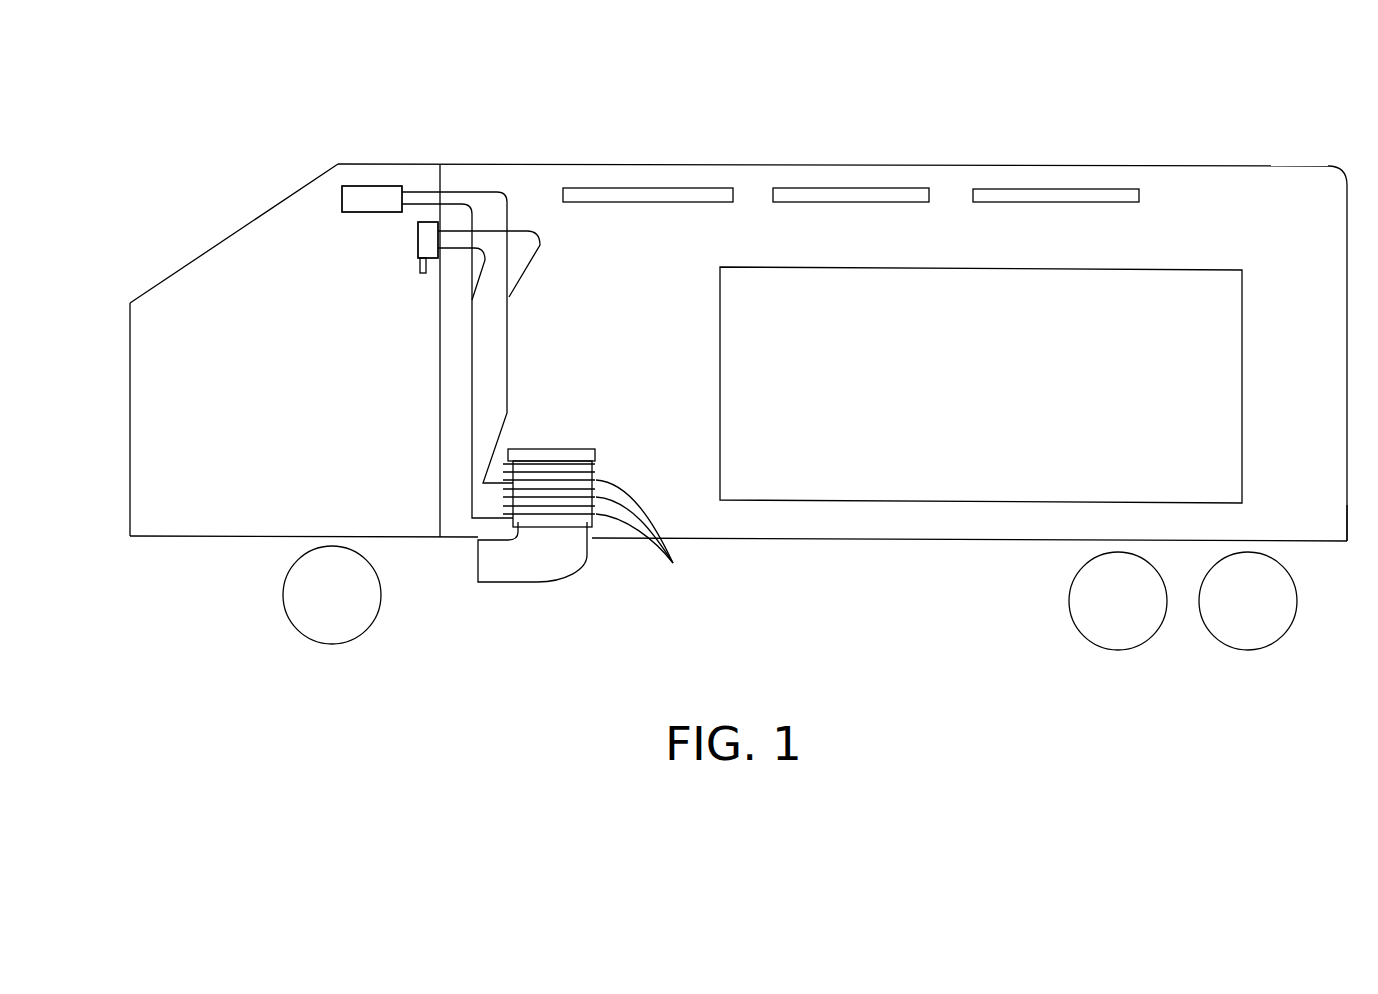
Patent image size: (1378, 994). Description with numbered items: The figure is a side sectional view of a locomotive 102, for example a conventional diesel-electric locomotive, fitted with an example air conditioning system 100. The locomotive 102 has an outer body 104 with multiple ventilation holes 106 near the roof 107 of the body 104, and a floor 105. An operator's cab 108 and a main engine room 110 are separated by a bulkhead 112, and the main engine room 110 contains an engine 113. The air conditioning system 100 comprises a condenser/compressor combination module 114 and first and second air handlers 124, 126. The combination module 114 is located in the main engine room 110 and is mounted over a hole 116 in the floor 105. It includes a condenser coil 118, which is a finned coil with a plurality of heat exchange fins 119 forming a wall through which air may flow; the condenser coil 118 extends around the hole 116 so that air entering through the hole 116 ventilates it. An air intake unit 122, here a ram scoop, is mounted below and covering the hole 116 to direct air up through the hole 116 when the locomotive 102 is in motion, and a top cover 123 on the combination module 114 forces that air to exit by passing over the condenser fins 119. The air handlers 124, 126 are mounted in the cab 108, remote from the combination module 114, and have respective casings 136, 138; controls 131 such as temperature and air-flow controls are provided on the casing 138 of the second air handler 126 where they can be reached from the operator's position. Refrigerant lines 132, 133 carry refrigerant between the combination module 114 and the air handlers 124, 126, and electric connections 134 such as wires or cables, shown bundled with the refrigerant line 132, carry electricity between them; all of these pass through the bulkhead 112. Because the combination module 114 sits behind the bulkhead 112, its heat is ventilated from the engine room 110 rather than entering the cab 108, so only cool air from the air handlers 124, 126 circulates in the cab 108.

The air conditioning system 100 is at (621, 344).
The locomotive 102 is at (195, 260).
The outer body 104 is at (498, 162).
The floor 105 is at (820, 540).
The ventilation holes 106 is at (617, 197).
The roof 107 is at (1201, 158).
The operator's cab 108 is at (161, 419).
The main engine room 110 is at (1307, 513).
The bulkhead 112 is at (440, 392).
The engine 113 is at (981, 385).
The condenser/compressor combination module 114 is at (592, 460).
The hole 116 is at (540, 545).
The condenser coil 118 is at (583, 482).
The heat exchange fins 119 is at (661, 529).
The air intake unit 122 is at (565, 555).
The top cover 123 is at (565, 450).
The first air handler 124 is at (340, 198).
The second air handler 126 is at (432, 244).
The controls 131 is at (425, 273).
The refrigerant line 132 is at (472, 353).
The refrigerant line 133 is at (510, 318).
The electric connections 134 is at (470, 328).
The casing 136 is at (355, 185).
The casing 138 is at (418, 228).